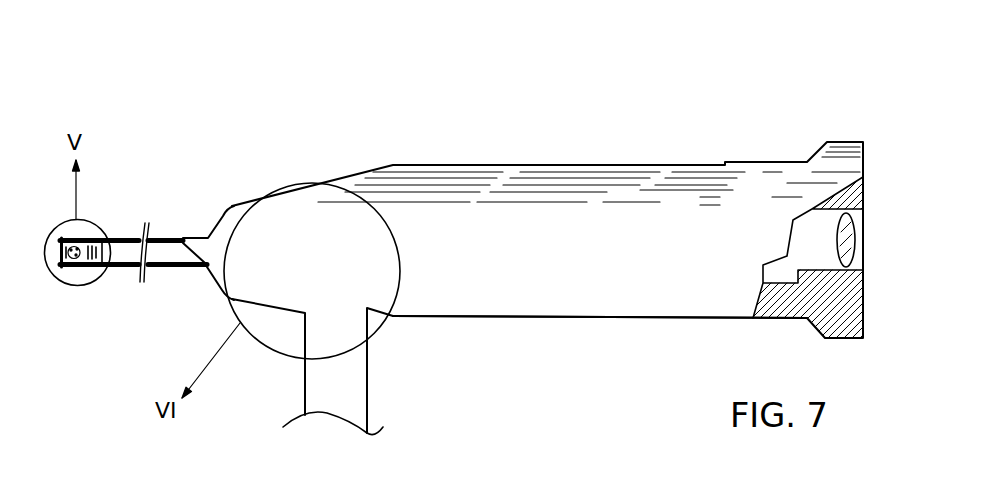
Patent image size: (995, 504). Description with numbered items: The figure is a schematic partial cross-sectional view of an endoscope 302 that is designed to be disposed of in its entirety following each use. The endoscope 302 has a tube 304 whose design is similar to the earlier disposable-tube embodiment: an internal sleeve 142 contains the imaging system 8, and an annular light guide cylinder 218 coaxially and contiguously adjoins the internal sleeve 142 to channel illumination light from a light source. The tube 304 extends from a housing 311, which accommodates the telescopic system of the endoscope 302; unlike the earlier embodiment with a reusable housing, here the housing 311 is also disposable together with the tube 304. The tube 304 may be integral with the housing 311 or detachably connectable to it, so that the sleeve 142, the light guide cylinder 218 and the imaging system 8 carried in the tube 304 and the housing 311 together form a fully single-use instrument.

The endoscope 302 is at (348, 122).
The tube 304 is at (198, 238).
The internal sleeve 142 is at (165, 238).
The light guide cylinder 218 is at (166, 268).
The imaging system 8 is at (63, 271).
The housing 311 is at (540, 302).